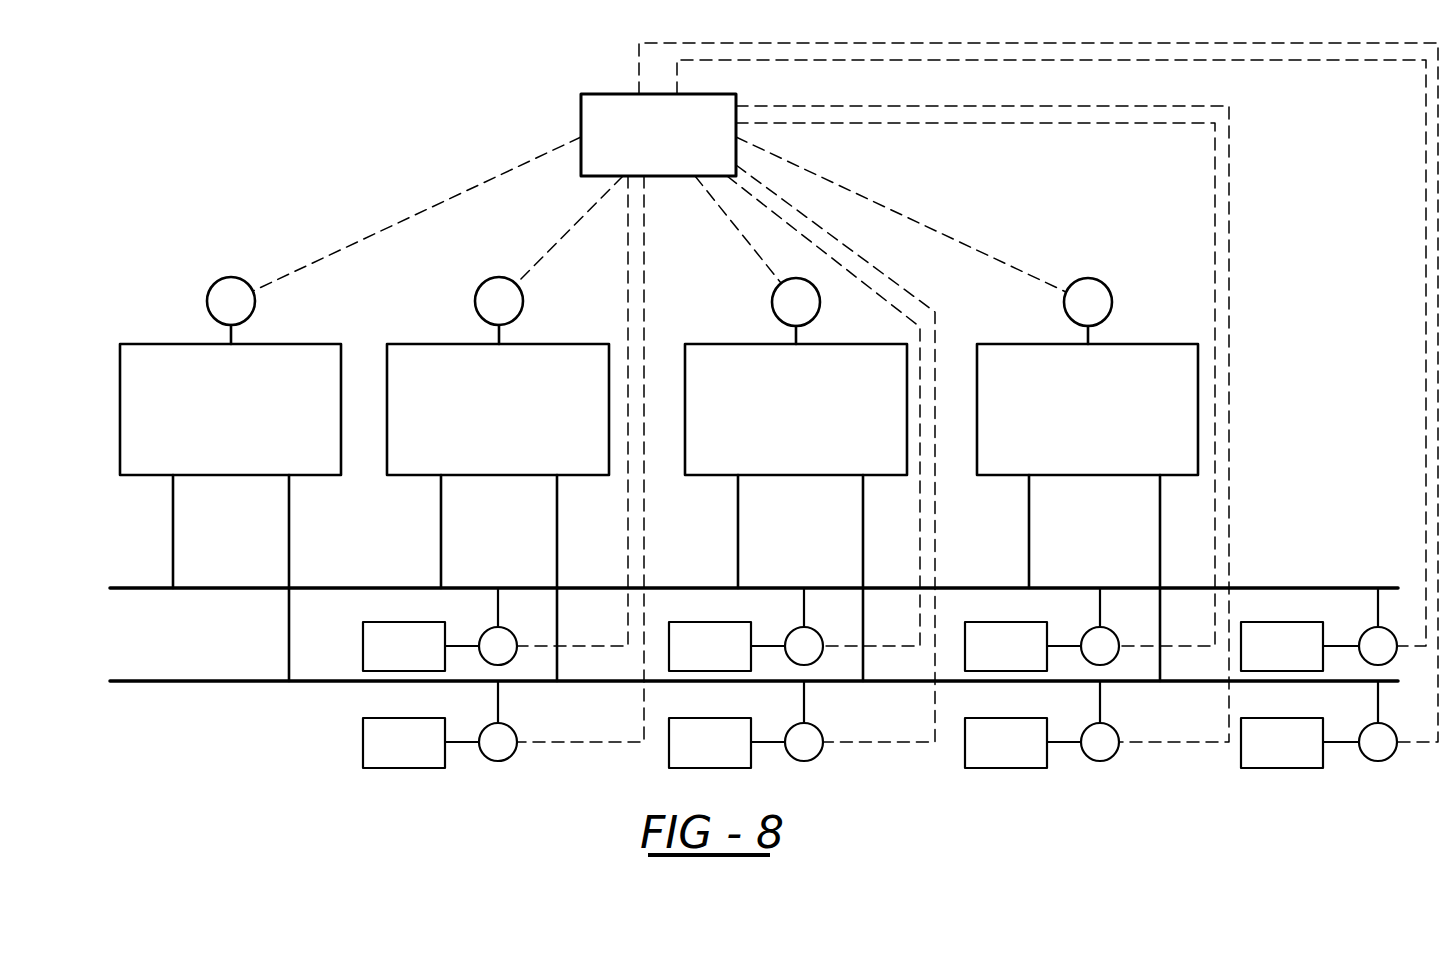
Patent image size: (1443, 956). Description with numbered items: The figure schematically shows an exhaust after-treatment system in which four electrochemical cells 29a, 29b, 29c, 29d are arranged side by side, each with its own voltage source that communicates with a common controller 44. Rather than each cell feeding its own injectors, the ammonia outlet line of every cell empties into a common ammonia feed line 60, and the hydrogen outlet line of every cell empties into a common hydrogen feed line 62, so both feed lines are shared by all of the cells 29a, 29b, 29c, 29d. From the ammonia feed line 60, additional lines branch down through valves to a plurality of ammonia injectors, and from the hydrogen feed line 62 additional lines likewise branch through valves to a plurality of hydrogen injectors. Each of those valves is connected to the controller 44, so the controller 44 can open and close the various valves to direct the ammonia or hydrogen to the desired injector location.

The controller 44 is at (672, 149).
The electrochemical cell 29a is at (210, 425).
The electrochemical cell 29b is at (477, 425).
The electrochemical cell 29c is at (775, 425).
The electrochemical cell 29d is at (1066, 425).
The feed line 60 is at (207, 588).
The feed line 62 is at (172, 681).